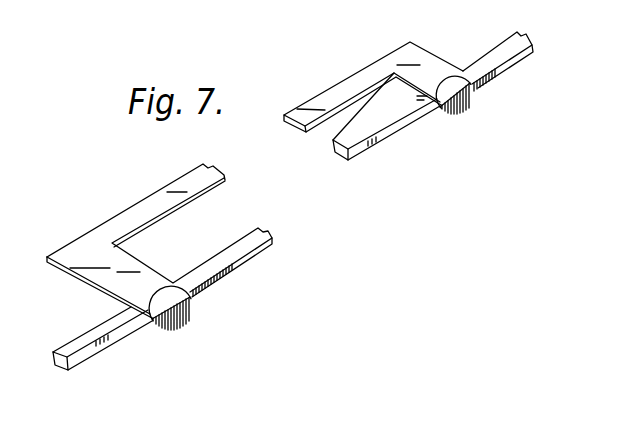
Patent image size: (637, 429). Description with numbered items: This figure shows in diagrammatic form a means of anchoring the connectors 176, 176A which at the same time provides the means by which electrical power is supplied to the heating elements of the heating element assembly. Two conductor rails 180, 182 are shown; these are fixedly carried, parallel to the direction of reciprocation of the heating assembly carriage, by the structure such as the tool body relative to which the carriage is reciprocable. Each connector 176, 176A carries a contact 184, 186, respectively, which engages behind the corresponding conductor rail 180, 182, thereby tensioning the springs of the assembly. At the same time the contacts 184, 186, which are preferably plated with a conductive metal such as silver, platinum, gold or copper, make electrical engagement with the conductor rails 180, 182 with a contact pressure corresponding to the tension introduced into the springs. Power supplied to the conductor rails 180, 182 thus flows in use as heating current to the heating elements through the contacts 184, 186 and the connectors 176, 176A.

The connector 176 is at (395, 67).
The connector 176A is at (158, 200).
The conductor rail 180 is at (492, 53).
The conductor rail 182 is at (92, 333).
The contact 184 is at (457, 100).
The contact 186 is at (180, 313).